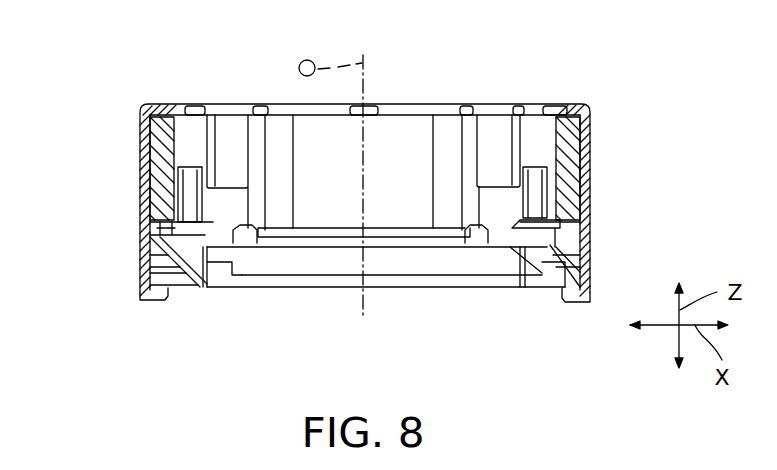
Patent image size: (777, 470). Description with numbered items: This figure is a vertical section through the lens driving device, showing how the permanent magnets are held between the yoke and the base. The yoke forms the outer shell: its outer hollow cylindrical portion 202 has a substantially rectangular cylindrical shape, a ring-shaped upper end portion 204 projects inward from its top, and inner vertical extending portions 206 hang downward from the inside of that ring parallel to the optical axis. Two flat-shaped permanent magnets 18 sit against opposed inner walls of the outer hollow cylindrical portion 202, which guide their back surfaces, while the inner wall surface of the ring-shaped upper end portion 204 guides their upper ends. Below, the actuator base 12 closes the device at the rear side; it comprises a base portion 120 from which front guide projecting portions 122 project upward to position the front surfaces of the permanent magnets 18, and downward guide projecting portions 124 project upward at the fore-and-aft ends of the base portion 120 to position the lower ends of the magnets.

The actuator base 12 is at (575, 285).
The flat-shaped permanent magnet 18 is at (162, 165).
The base portion 120 is at (192, 268).
The front guide projecting portion 122 is at (203, 201).
The downward guide projecting portion 124 is at (563, 228).
The outer hollow cylindrical portion 202 is at (143, 137).
The ring-shaped upper end portion 204 is at (162, 104).
The inner vertical extending portion 206 is at (230, 130).